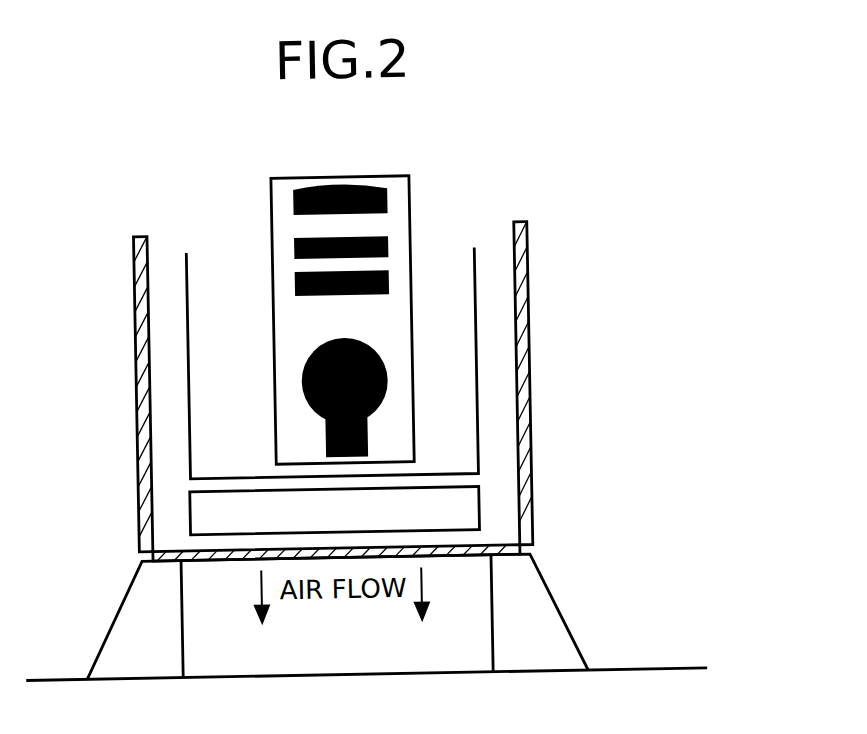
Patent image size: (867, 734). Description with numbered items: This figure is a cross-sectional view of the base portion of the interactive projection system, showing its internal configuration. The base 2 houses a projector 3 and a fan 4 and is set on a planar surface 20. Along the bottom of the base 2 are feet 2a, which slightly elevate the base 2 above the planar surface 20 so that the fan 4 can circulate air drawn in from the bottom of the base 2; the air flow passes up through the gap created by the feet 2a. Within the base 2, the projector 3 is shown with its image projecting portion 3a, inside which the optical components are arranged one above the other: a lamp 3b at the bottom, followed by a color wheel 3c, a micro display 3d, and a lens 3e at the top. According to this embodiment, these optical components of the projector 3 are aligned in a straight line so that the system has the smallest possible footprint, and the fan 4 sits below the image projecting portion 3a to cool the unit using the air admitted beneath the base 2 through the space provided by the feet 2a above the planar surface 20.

The base 2 is at (531, 404).
The feet 2a is at (110, 604).
The projector 3 is at (479, 327).
The image projecting portion 3a is at (397, 178).
The lamp 3b is at (304, 381).
The color wheel 3c is at (300, 280).
The micro display 3d is at (300, 246).
The lens 3e is at (300, 195).
The fan 4 is at (478, 502).
The planar surface 20 is at (616, 675).